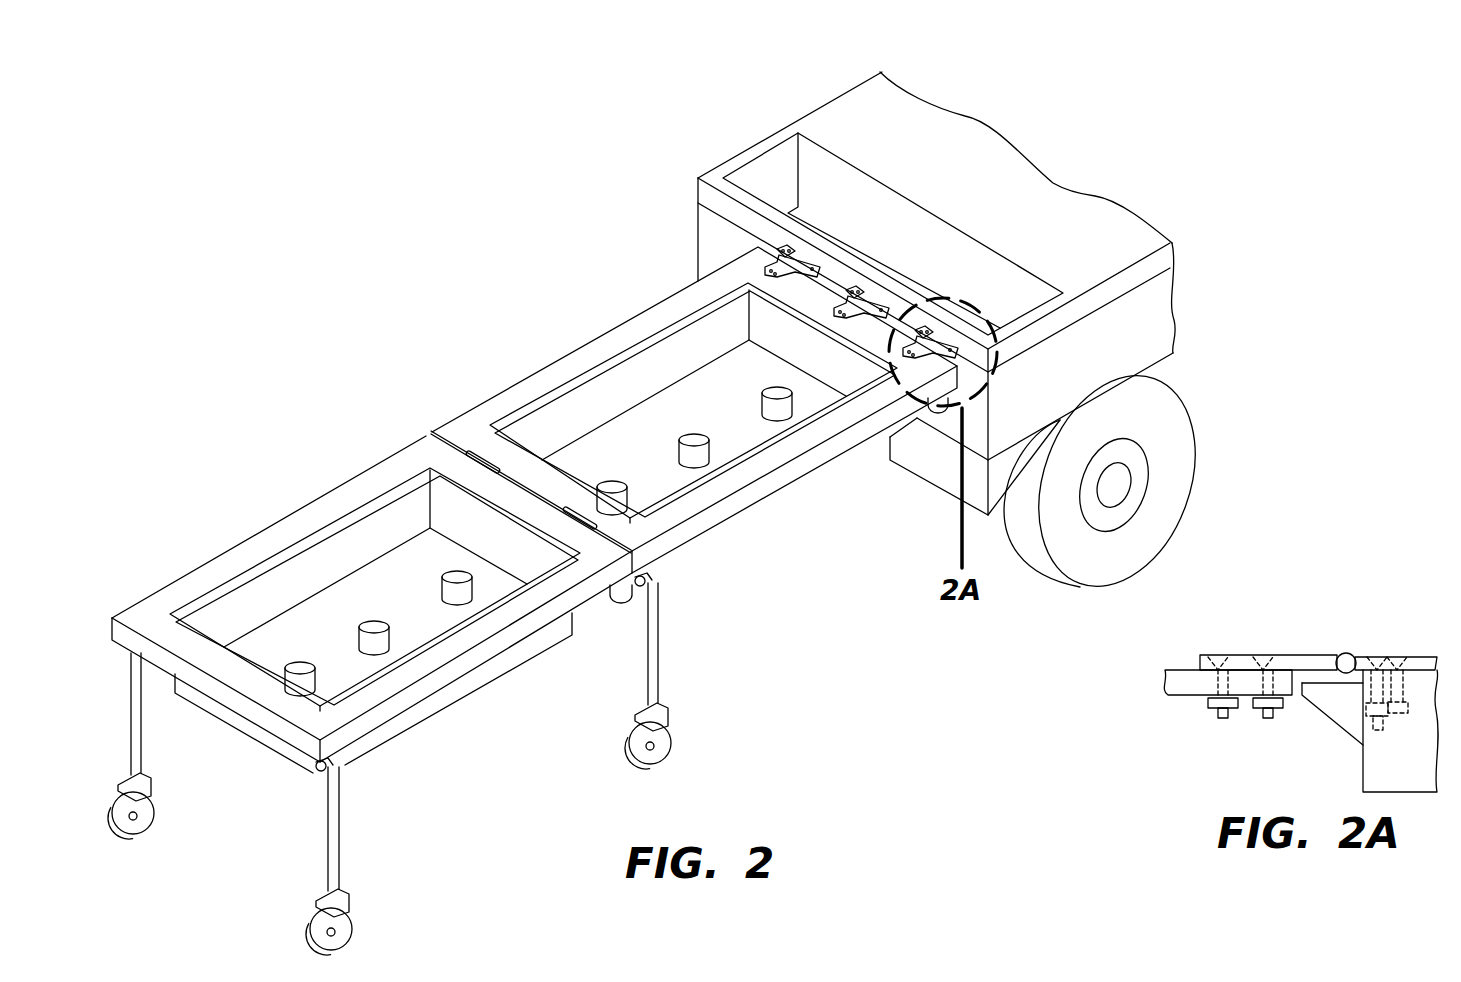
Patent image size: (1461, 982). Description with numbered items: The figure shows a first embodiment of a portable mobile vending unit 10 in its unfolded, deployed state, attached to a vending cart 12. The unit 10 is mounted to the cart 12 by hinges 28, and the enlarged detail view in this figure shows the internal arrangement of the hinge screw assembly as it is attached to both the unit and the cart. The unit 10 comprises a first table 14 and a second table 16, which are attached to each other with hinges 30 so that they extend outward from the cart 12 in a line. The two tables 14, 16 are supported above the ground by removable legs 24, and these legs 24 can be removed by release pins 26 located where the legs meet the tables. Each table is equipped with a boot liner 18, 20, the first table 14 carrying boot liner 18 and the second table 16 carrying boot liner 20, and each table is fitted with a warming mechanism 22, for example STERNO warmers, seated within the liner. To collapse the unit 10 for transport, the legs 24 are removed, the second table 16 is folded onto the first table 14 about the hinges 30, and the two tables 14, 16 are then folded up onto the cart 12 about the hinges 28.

The portable mobile vending unit 10 is at (500, 123).
The cart 12 is at (820, 122).
The first table 14 is at (527, 388).
The second table 16 is at (360, 485).
The boot liner 18 is at (732, 409).
The boot liner 20 is at (413, 592).
The warming mechanism 22 is at (683, 452).
The removable legs 24 is at (140, 747).
The release pins 26 is at (318, 775).
The hinges 28 is at (799, 256).
The hinges 30 is at (467, 455).